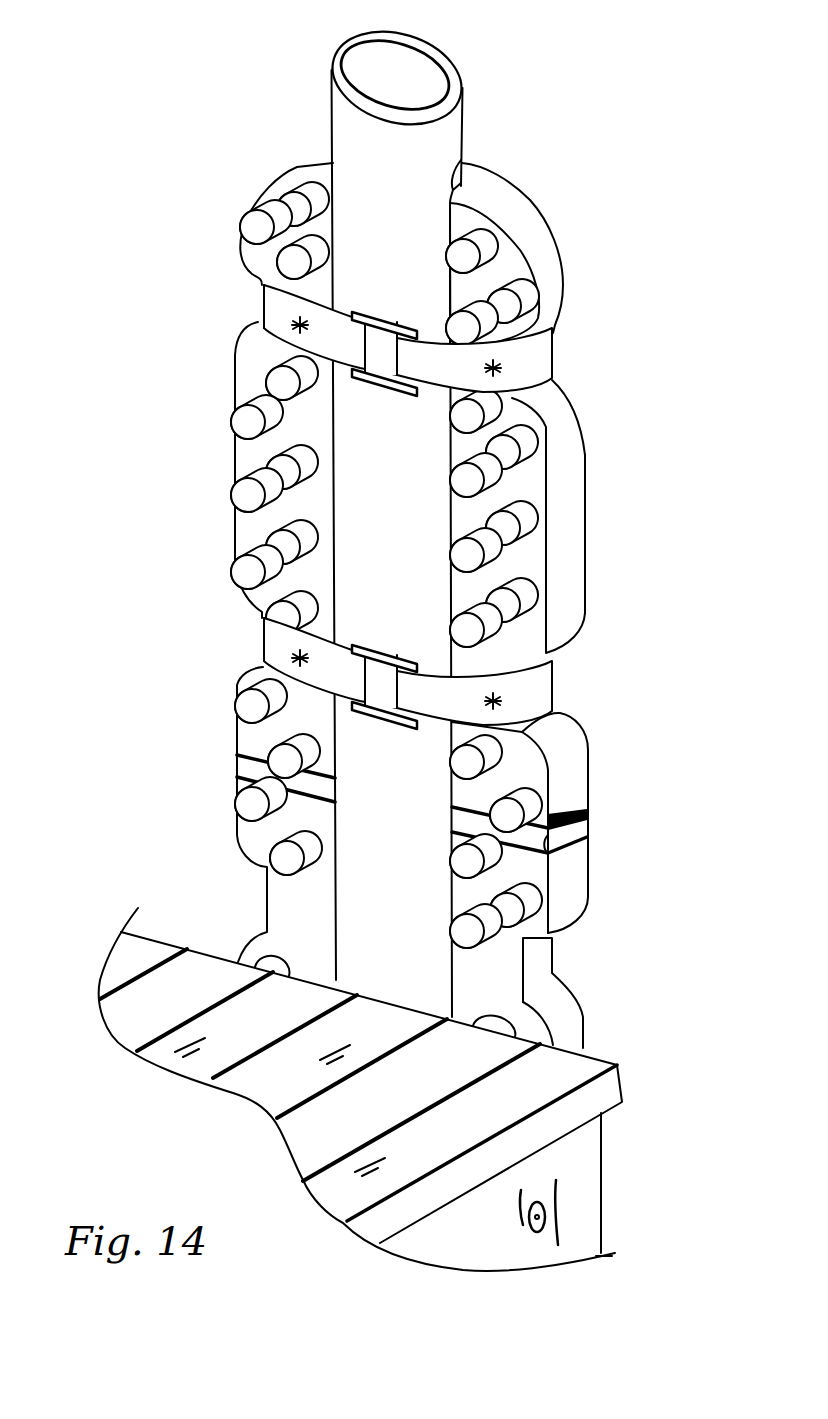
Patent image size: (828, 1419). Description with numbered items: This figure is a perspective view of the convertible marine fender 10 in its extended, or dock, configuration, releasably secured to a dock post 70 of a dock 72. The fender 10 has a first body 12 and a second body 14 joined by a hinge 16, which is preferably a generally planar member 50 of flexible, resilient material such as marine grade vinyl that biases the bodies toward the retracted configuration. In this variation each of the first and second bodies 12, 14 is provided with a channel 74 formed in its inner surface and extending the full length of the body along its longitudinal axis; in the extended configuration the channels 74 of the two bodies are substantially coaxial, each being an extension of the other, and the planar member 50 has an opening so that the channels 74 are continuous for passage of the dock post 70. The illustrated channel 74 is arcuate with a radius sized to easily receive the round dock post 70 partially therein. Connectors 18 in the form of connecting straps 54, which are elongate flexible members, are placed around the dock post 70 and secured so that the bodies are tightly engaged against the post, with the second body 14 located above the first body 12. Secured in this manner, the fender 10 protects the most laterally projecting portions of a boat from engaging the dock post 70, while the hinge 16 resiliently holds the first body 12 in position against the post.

The convertible marine fender 10 is at (590, 526).
The first body 12 is at (590, 1013).
The second body 14 is at (587, 460).
The hinge 16 is at (592, 832).
The connectors 18 is at (263, 317).
The planar member 50 is at (237, 762).
The connecting straps 54 is at (262, 297).
The dock post 70 is at (437, 48).
The dock 72 is at (155, 940).
The channel 74 is at (467, 157).